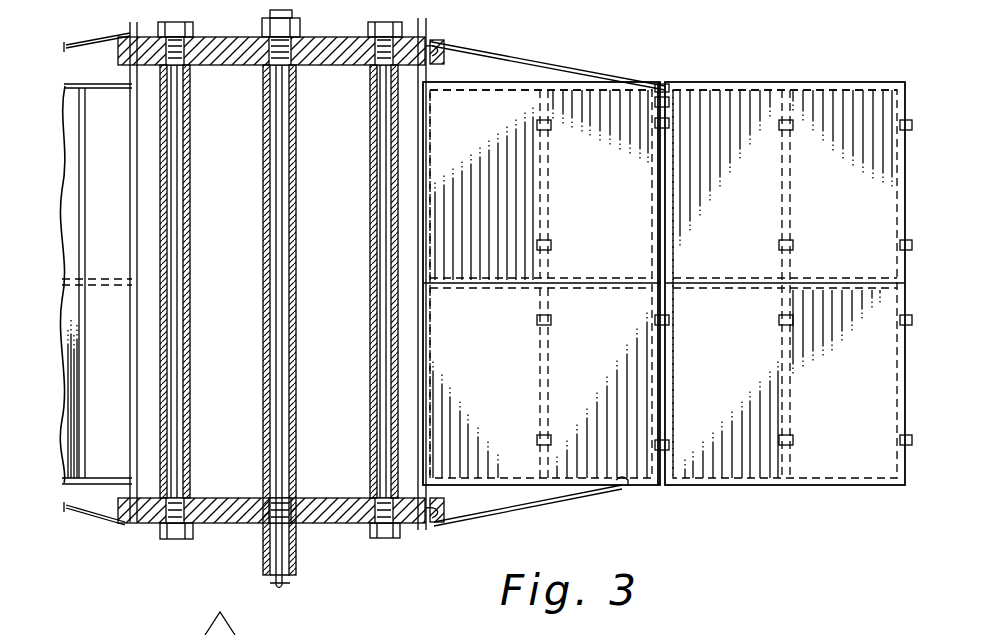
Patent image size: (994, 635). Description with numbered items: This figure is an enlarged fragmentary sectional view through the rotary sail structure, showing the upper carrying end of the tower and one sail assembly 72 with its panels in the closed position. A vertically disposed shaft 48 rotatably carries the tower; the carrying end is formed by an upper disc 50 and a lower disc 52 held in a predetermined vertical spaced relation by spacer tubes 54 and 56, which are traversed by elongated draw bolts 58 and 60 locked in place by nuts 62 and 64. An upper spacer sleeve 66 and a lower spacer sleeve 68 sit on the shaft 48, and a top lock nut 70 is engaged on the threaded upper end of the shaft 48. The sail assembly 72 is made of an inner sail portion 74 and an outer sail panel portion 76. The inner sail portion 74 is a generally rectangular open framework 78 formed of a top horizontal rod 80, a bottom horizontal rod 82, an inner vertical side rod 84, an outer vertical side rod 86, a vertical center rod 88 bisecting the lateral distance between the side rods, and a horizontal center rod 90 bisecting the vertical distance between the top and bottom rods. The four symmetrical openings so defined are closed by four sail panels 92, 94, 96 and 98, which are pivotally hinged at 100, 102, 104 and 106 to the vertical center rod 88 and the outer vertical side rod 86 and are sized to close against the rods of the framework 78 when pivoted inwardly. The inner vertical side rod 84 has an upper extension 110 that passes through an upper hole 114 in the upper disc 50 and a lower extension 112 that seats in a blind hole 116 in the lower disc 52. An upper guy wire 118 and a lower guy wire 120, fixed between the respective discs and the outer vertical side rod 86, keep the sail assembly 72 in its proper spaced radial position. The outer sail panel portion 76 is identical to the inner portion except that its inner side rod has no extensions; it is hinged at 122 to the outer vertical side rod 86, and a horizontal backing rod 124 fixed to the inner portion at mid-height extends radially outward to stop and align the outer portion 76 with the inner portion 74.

The shaft 48 is at (293, 228).
The upper disc 50 is at (350, 42).
The lower disc 52 is at (322, 527).
The spacer tube 54 is at (168, 404).
The spacer tube 56 is at (374, 402).
The draw bolt 58 is at (178, 338).
The draw bolt 60 is at (380, 318).
The nut 62 is at (212, 26).
The nut 64 is at (384, 28).
The upper spacer sleeve 66 is at (265, 276).
The lower spacer sleeve 68 is at (266, 548).
The top lock nut 70 is at (292, 30).
The sail assembly 72 is at (849, 75).
The inner sail portion 74 is at (492, 88).
The outer sail panel portion 76 is at (760, 84).
The open framework 78 is at (520, 94).
The top horizontal rod 80 is at (604, 86).
The bottom horizontal rod 82 is at (622, 492).
The inner vertical side rod 84 is at (434, 396).
The outer vertical side rod 86 is at (652, 212).
The vertical center rod 88 is at (548, 374).
The horizontal center rod 90 is at (614, 282).
The sail panel 92 is at (483, 142).
The sail panel 94 is at (501, 398).
The sail panel 96 is at (611, 225).
The sail panel 98 is at (611, 331).
The hinge 100 is at (550, 132).
The hinge 102 is at (552, 322).
The hinge 104 is at (640, 130).
The hinge 106 is at (652, 318).
The upper extension 110 is at (434, 38).
The lower extension 112 is at (446, 492).
The upper hole 114 is at (440, 60).
The blind hole 116 is at (434, 524).
The upper guy wire 118 is at (546, 62).
The lower guy wire 120 is at (516, 508).
The hinge 122 is at (674, 98).
The horizontal backing rod 124 is at (746, 278).